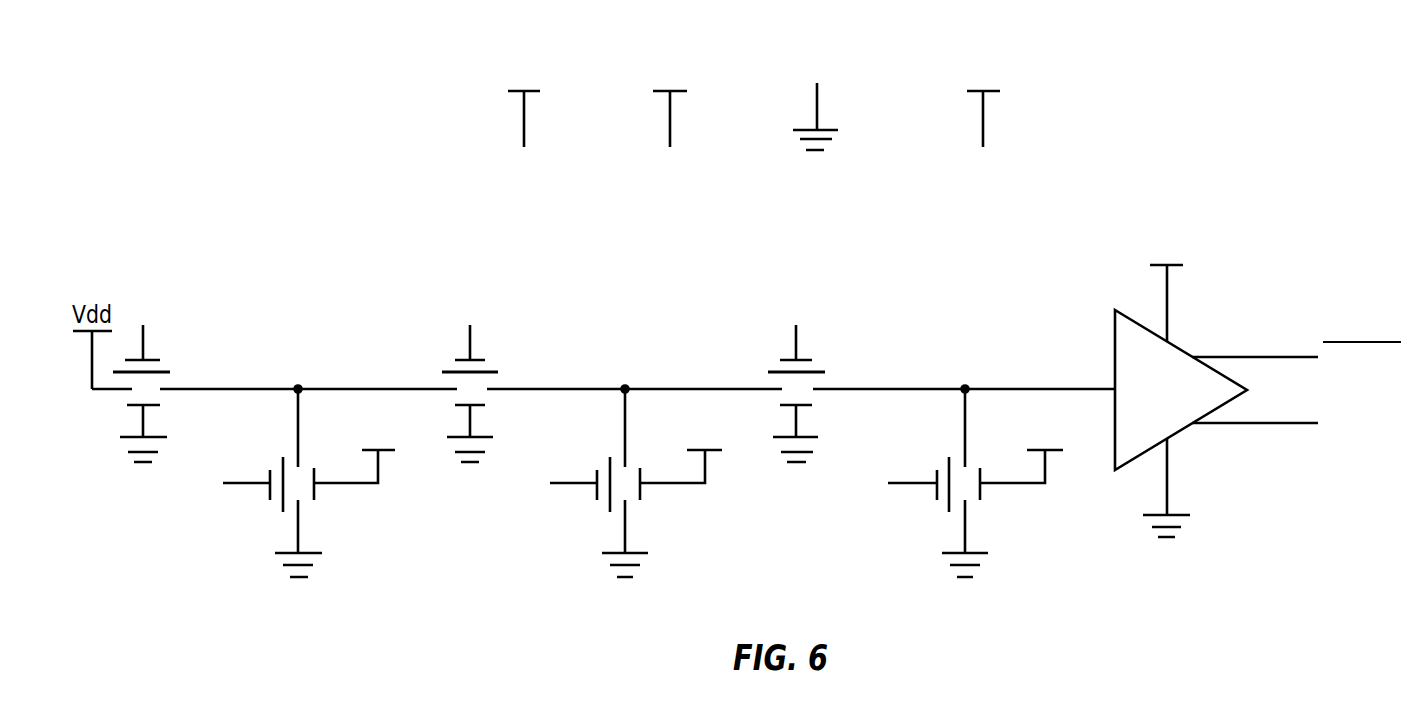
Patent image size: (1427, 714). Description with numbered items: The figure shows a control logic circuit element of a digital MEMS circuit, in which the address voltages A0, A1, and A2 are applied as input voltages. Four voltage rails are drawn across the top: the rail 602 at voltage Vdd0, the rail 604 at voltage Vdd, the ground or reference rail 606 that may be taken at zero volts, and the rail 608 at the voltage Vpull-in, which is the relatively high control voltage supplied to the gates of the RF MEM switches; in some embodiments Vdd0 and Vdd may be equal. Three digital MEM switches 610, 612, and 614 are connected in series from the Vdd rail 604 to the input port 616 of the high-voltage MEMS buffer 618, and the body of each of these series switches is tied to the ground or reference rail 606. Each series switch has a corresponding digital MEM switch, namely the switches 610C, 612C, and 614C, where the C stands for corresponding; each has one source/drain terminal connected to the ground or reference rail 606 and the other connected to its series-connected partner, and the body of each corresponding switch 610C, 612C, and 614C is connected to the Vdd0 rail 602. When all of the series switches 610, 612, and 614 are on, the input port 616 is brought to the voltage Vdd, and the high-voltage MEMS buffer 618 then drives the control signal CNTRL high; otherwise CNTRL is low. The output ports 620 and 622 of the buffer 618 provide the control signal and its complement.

The voltage rail 602 is at (521, 113).
The voltage rail 604 is at (667, 113).
The ground or reference rail 606 is at (814, 113).
The voltage rail 608 is at (980, 113).
The digital MEM switch 610 is at (180, 357).
The digital MEM switch 612 is at (507, 359).
The digital MEM switch 614 is at (832, 359).
The digital MEM switch 610C is at (317, 515).
The digital MEM switch 612C is at (643, 515).
The digital MEM switch 614C is at (984, 515).
The input port 616 is at (1042, 389).
The high-voltage MEMS buffer 618 is at (1115, 330).
The output port 620 is at (1237, 423).
The output port 622 is at (1237, 357).